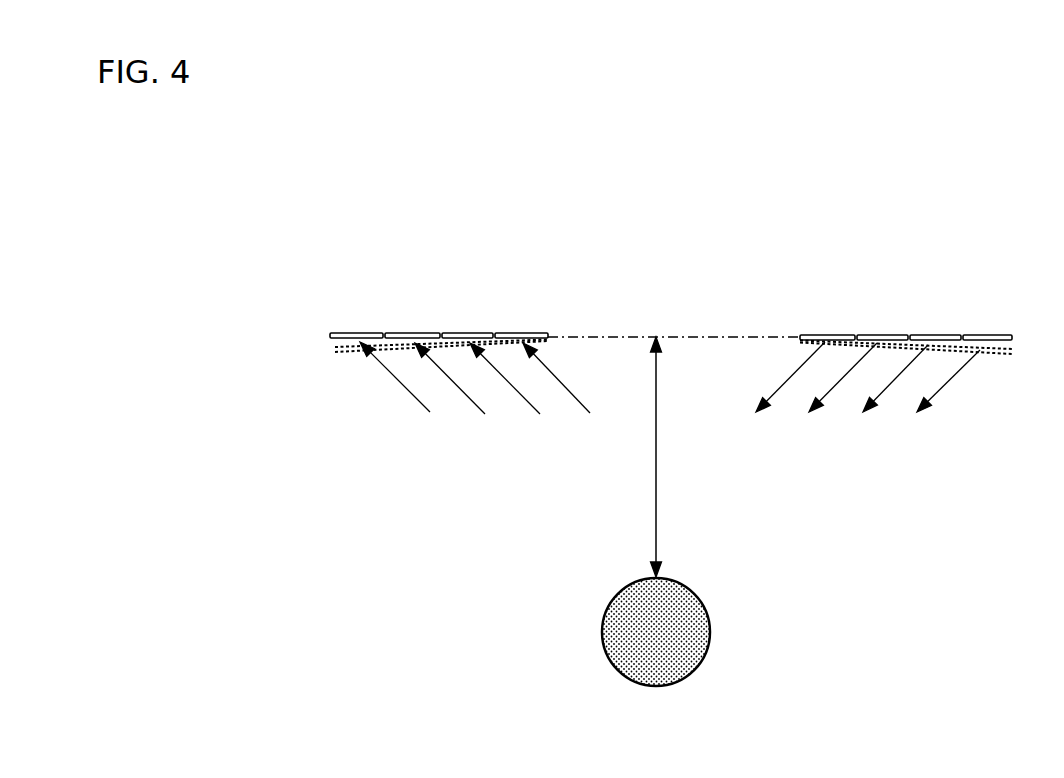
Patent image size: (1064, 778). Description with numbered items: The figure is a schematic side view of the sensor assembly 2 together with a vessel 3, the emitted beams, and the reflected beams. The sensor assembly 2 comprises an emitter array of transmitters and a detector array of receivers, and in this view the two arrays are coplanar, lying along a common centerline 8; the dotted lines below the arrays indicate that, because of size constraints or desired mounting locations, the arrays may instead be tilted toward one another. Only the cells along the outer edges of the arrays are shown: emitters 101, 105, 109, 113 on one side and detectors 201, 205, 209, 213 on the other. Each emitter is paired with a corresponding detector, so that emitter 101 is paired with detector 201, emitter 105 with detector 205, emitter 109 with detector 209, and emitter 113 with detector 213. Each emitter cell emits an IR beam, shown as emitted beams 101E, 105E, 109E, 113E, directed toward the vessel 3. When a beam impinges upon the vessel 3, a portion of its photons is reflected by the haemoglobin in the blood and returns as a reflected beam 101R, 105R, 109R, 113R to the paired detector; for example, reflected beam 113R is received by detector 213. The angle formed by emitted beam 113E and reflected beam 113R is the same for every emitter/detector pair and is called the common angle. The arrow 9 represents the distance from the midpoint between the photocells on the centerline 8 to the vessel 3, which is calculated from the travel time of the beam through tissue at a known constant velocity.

The sensor assembly 2 is at (681, 242).
The vessel 3 is at (705, 657).
The centerline 8 is at (673, 337).
The arrow 9 is at (656, 420).
The detector 201 is at (342, 333).
The detector 205 is at (393, 333).
The detector 209 is at (448, 333).
The detector 213 is at (500, 333).
The emitter 101 is at (847, 335).
The emitter 105 is at (900, 335).
The emitter 109 is at (953, 335).
The emitter 113 is at (1007, 335).
The reflected beam 101R is at (378, 357).
The reflected beam 105R is at (440, 370).
The reflected beam 109R is at (507, 380).
The reflected beam 113R is at (542, 363).
The emitted beam 101E is at (787, 375).
The emitted beam 105E is at (837, 385).
The emitted beam 109E is at (912, 367).
The emitted beam 113E is at (967, 361).